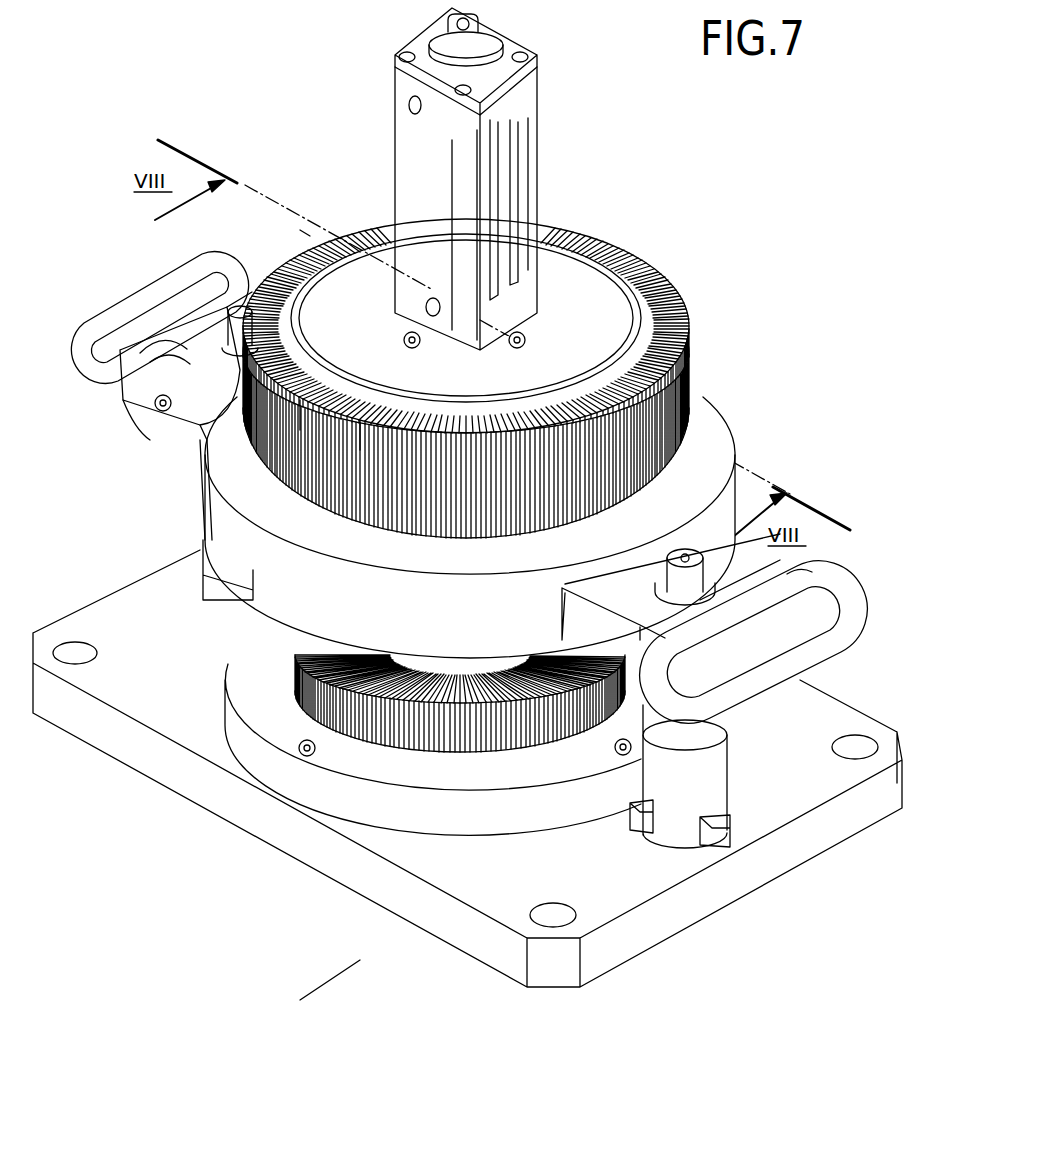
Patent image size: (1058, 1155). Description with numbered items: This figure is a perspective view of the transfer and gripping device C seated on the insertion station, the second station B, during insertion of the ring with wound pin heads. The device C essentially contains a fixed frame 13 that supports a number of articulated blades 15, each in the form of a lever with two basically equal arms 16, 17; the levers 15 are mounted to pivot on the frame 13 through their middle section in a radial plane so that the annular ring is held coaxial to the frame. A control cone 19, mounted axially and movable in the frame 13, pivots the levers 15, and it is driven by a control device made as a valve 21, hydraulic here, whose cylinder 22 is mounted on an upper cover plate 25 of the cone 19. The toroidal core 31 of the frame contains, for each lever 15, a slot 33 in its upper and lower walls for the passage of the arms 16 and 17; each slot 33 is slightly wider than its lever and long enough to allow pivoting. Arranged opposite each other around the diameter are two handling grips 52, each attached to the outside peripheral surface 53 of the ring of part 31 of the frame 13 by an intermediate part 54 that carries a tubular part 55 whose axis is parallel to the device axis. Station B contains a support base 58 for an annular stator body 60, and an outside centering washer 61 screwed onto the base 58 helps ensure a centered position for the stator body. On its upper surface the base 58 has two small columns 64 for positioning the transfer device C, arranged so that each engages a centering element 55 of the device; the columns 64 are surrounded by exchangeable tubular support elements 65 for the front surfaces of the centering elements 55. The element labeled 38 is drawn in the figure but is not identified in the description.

The fixed frame 13 is at (727, 421).
The articulated blades 15 is at (425, 543).
The arm 16 is at (330, 480).
The arm 17 is at (440, 735).
The control cone 19 is at (675, 287).
The valve 21 is at (545, 112).
The cylinder 22 is at (528, 197).
The upper cover plate 25 is at (577, 285).
The toroidal core 31 is at (703, 430).
The slot 33 is at (355, 500).
The toothed ring edge 38 is at (300, 228).
The handling grips 52 is at (830, 590).
The outside peripheral surface 53 is at (720, 510).
The intermediate part 54 is at (132, 427).
The tubular part 55 is at (200, 440).
The support base 58 is at (700, 900).
The annular stator body 60 is at (478, 740).
The outside centering washer 61 is at (567, 806).
The small columns 64 is at (672, 582).
The tubular support elements 65 is at (710, 790).
The second station B is at (380, 918).
The transfer device C is at (700, 310).